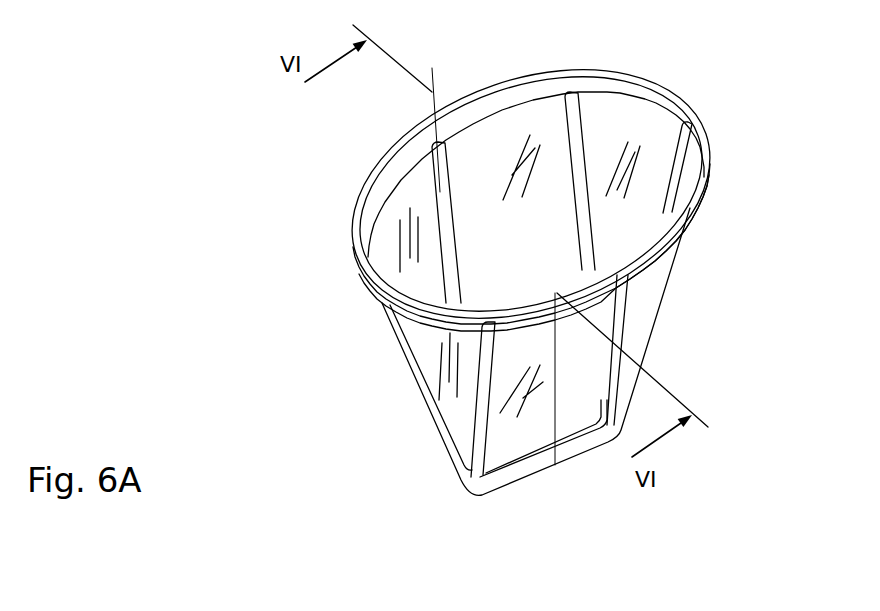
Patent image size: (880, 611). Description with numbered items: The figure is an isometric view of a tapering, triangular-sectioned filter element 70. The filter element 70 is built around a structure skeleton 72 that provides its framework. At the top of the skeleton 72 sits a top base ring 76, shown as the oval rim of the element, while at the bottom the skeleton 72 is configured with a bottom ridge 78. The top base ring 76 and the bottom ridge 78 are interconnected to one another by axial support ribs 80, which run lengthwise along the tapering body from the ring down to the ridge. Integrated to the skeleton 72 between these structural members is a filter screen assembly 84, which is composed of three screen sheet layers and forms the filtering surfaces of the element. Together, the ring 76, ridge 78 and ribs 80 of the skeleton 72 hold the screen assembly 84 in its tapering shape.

The filter element 70 is at (311, 222).
The structure skeleton 72 is at (393, 333).
The top base ring 76 is at (670, 84).
The bottom ridge 78 is at (530, 467).
The axial support ribs 80 is at (447, 173).
The filter screen assembly 84 is at (457, 399).